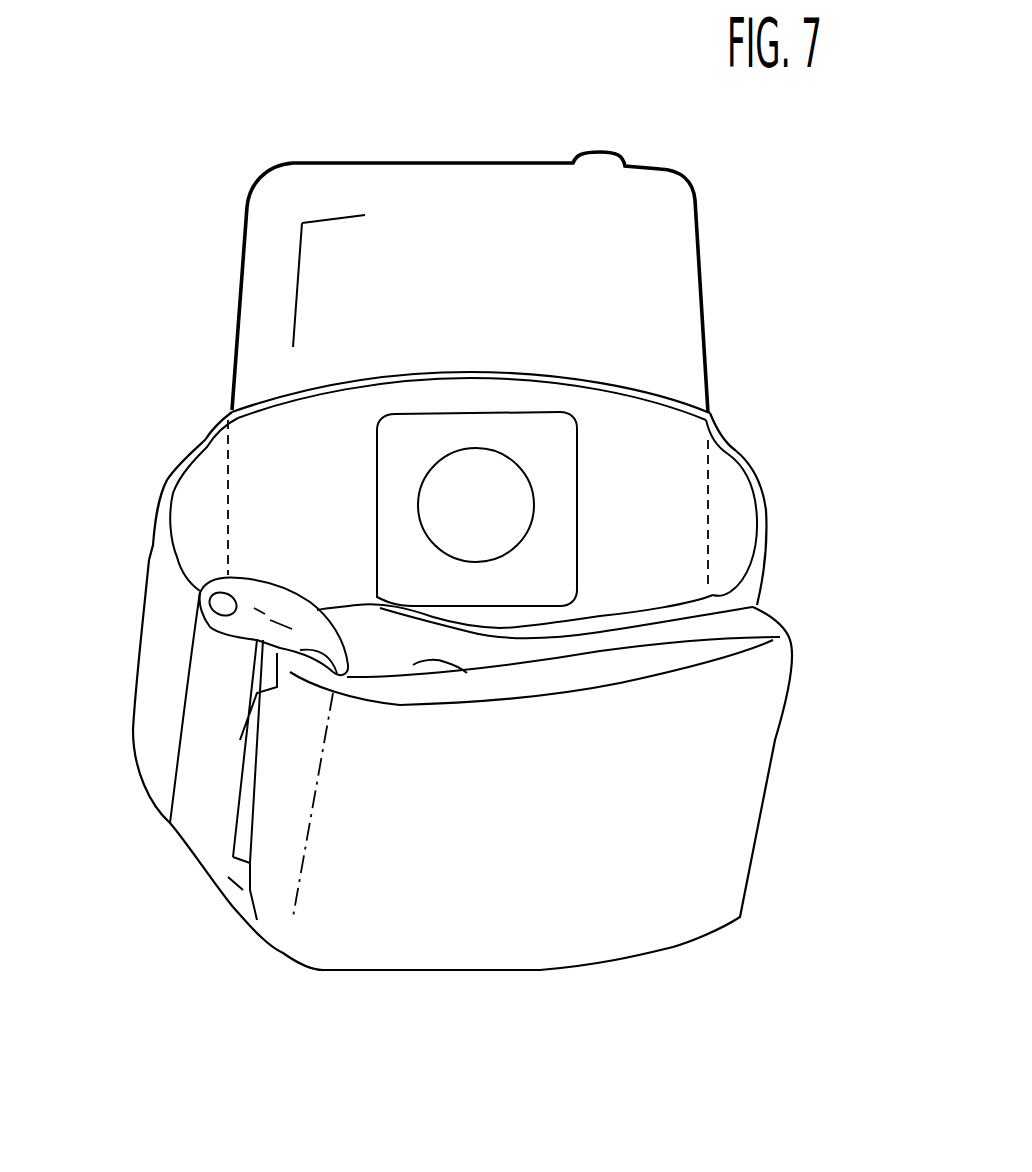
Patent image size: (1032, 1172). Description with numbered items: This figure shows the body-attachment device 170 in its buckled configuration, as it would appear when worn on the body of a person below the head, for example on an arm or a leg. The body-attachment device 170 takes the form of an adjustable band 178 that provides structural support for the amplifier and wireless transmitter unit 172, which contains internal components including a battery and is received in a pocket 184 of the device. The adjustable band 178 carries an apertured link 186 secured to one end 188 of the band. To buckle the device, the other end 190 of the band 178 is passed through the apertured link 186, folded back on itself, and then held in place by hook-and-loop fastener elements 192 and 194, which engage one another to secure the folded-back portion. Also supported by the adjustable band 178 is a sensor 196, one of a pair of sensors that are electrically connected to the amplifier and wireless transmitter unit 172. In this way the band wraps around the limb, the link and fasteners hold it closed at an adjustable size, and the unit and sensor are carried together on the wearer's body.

The body-attachment device 170 is at (800, 370).
The amplifier and wireless transmitter unit 172 is at (660, 228).
The adjustable band 178 is at (755, 478).
The pocket 184 is at (265, 442).
The apertured link 186 is at (248, 592).
The one end 188 is at (148, 748).
The other end 190 is at (697, 888).
The hook-and-loop fastener element 192 is at (632, 638).
The hook-and-loop fastener element 194 is at (413, 665).
The sensor 196 is at (437, 512).